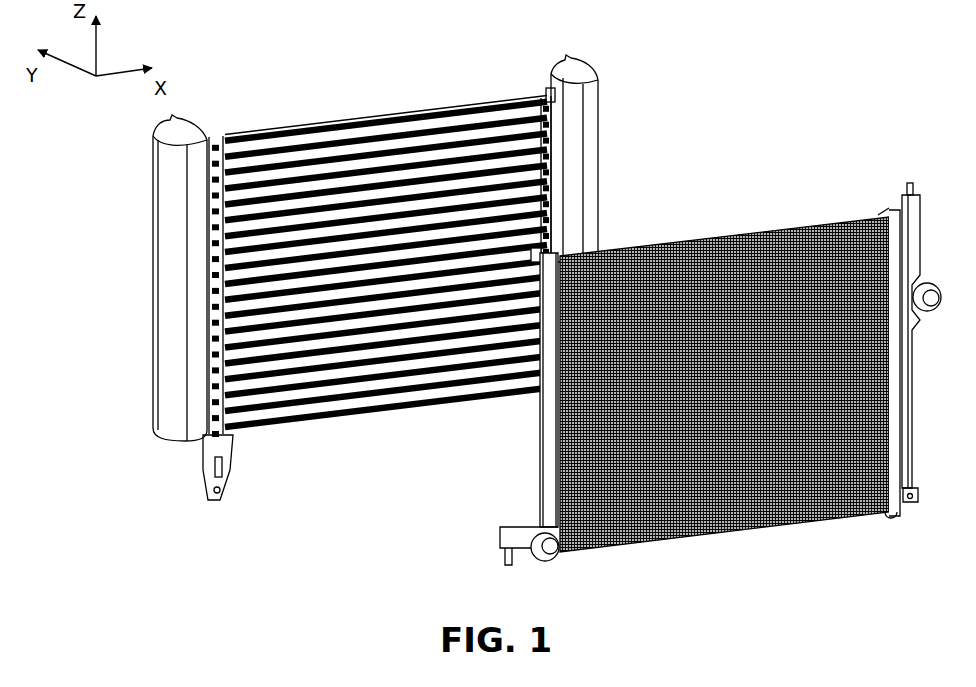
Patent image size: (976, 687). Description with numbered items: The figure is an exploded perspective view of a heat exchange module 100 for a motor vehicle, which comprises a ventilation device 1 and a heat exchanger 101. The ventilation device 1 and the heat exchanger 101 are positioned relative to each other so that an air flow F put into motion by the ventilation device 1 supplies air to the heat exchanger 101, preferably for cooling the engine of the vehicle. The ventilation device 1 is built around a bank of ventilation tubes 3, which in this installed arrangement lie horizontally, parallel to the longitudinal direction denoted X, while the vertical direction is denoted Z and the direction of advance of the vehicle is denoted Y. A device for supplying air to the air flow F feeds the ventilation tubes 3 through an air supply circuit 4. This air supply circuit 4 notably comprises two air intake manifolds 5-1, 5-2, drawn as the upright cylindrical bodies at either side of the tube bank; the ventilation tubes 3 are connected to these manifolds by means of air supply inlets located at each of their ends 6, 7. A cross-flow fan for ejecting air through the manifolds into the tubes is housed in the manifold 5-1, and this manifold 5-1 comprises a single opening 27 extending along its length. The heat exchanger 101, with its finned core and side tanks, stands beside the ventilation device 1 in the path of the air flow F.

The ventilation device 1 is at (358, 259).
The ventilation tubes 3 is at (432, 112).
The air supply circuit 4 is at (358, 266).
The air intake manifold 5-1 is at (145, 307).
The air intake manifold 5-2 is at (583, 167).
The tube end 6 is at (213, 243).
The tube end 7 is at (558, 118).
The opening 27 is at (155, 296).
The heat exchange module 100 is at (720, 341).
The heat exchanger 101 is at (780, 520).
The air flow F is at (137, 321).